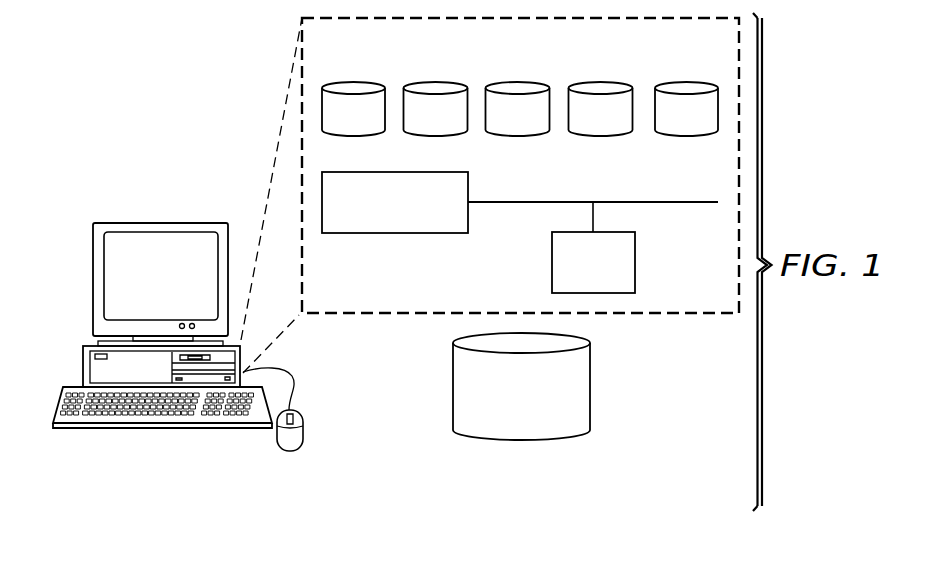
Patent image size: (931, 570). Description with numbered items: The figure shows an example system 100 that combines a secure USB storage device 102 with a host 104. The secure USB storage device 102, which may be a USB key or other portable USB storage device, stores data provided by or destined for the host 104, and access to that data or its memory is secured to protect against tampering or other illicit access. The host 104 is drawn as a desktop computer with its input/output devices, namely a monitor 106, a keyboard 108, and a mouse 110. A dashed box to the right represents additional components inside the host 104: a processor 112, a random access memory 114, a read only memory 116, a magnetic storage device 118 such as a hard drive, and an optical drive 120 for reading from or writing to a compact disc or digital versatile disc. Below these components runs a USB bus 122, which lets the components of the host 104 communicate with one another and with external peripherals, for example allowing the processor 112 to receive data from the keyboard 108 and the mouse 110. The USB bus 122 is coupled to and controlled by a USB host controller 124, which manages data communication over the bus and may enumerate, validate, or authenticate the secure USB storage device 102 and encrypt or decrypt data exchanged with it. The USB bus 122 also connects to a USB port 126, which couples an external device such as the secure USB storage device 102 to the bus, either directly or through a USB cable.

The system 100 is at (163, 110).
The secure USB storage device 102 is at (590, 388).
The host 104 is at (150, 220).
The monitor 106 is at (93, 278).
The keyboard 108 is at (151, 429).
The mouse 110 is at (289, 451).
The processor 112 is at (352, 88).
The random access memory (RAM) 114 is at (438, 88).
The read only memory (ROM) 116 is at (522, 88).
The magnetic storage device 118 is at (603, 88).
The optical drive 120 is at (688, 88).
The USB bus 122 is at (655, 202).
The USB host controller 124 is at (393, 234).
The USB port 126 is at (636, 262).